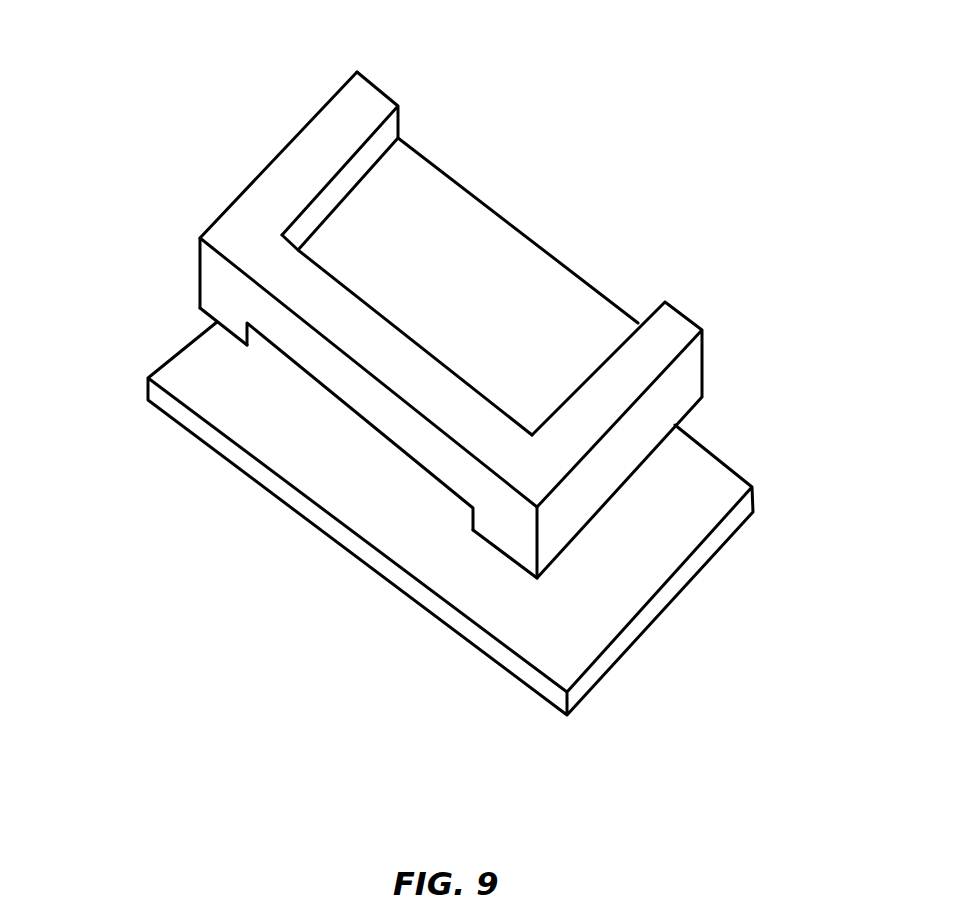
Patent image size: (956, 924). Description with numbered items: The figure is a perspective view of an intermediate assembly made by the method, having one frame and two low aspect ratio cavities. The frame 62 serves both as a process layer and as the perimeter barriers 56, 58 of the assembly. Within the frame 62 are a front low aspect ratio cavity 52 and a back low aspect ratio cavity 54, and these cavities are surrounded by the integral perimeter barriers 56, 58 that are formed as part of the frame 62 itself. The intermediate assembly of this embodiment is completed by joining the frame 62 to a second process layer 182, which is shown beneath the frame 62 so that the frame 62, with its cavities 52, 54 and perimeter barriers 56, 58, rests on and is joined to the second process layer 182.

The front low aspect ratio cavity 52 is at (250, 337).
The back low aspect ratio cavity 54 is at (387, 135).
The perimeter barrier 56 is at (345, 117).
The perimeter barrier 58 is at (205, 313).
The frame 62 is at (230, 199).
The second process layer 182 is at (682, 502).